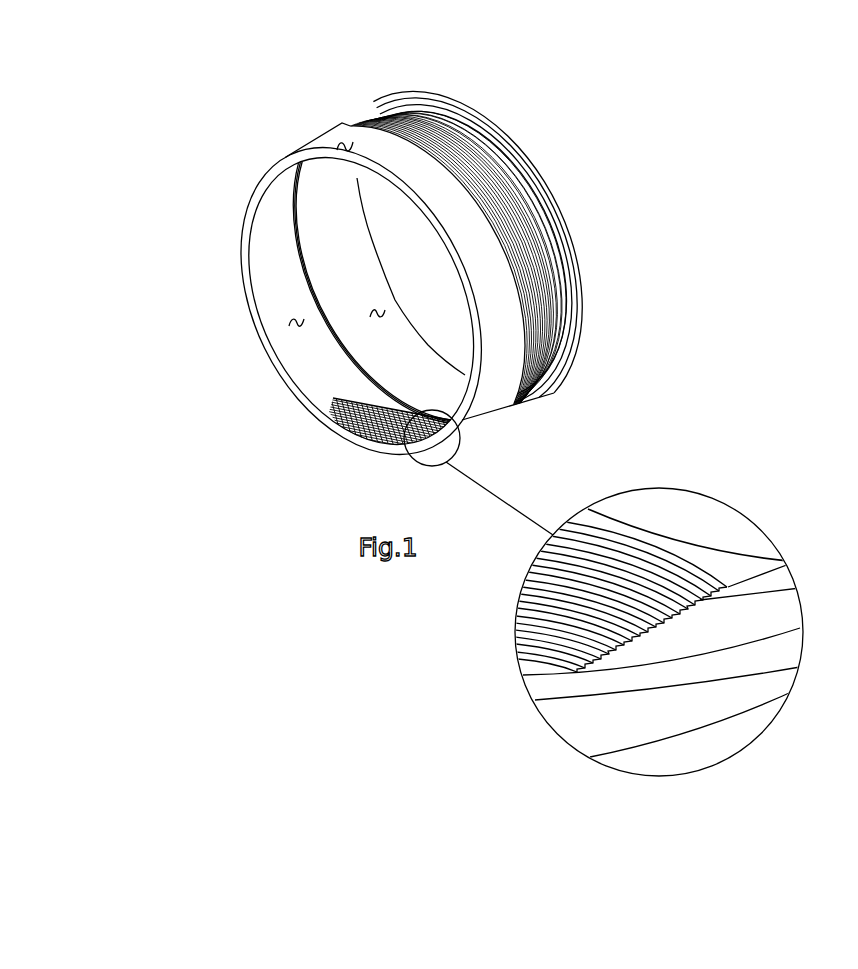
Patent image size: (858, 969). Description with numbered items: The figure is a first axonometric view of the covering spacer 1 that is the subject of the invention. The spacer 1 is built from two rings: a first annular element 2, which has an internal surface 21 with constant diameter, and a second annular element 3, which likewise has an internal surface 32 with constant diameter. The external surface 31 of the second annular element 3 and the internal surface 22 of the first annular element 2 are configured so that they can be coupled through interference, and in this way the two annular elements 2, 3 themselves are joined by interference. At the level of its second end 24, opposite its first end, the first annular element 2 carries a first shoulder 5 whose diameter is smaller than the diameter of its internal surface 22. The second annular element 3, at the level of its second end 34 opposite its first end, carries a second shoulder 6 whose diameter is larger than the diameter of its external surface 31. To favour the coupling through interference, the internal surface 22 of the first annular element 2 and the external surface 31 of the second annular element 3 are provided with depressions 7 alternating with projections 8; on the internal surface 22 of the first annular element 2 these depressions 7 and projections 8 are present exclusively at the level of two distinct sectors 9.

The covering spacer 1 is at (406, 252).
The first annular element 2 is at (359, 278).
The second annular element 3 is at (499, 245).
The first shoulder 5 is at (248, 283).
The second shoulder 6 is at (578, 272).
The depressions 7 is at (687, 587).
The projections 8 is at (690, 603).
The sectors 9 is at (385, 222).
The internal surface of the first annular element 21 is at (347, 140).
The internal surface of the first annular element 22 is at (294, 323).
The second end of the first annular element 24 is at (233, 232).
The external surface of the second annular element 31 is at (533, 430).
The internal surface of the second annular element 32 is at (386, 310).
The second end of the second annular element 34 is at (568, 163).